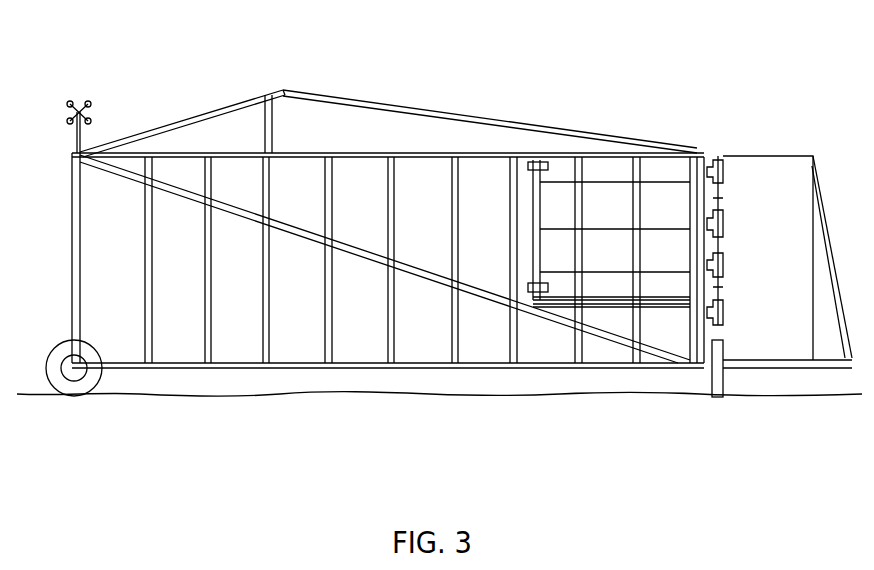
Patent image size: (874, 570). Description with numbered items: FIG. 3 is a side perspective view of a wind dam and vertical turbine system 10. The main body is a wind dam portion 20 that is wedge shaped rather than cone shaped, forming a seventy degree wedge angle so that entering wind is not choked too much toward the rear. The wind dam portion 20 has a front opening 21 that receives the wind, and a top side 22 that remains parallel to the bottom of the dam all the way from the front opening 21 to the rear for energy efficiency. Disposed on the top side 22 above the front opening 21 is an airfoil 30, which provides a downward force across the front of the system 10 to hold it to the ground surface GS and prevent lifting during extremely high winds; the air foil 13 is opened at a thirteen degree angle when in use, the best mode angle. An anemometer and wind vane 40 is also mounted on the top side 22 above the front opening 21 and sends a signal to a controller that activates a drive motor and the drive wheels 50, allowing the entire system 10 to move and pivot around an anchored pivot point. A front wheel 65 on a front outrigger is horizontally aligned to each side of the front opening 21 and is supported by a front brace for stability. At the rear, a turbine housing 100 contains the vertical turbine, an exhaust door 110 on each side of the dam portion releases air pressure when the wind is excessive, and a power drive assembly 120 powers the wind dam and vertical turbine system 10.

The wind dam and vertical turbine system 10 is at (622, 82).
The air foil 13 is at (613, 368).
The wind dam portion 20 is at (369, 239).
The front opening 21 is at (73, 249).
The top side 22 is at (415, 152).
The airfoil 30 is at (160, 125).
The anemometer and wind vane 40 is at (67, 122).
The drive wheels 50 is at (723, 380).
The front wheel 65 is at (58, 352).
The turbine housing 100 is at (777, 230).
The exhaust door 110 is at (615, 265).
The power drive assembly 120 is at (720, 157).
The ground surface GS is at (462, 449).